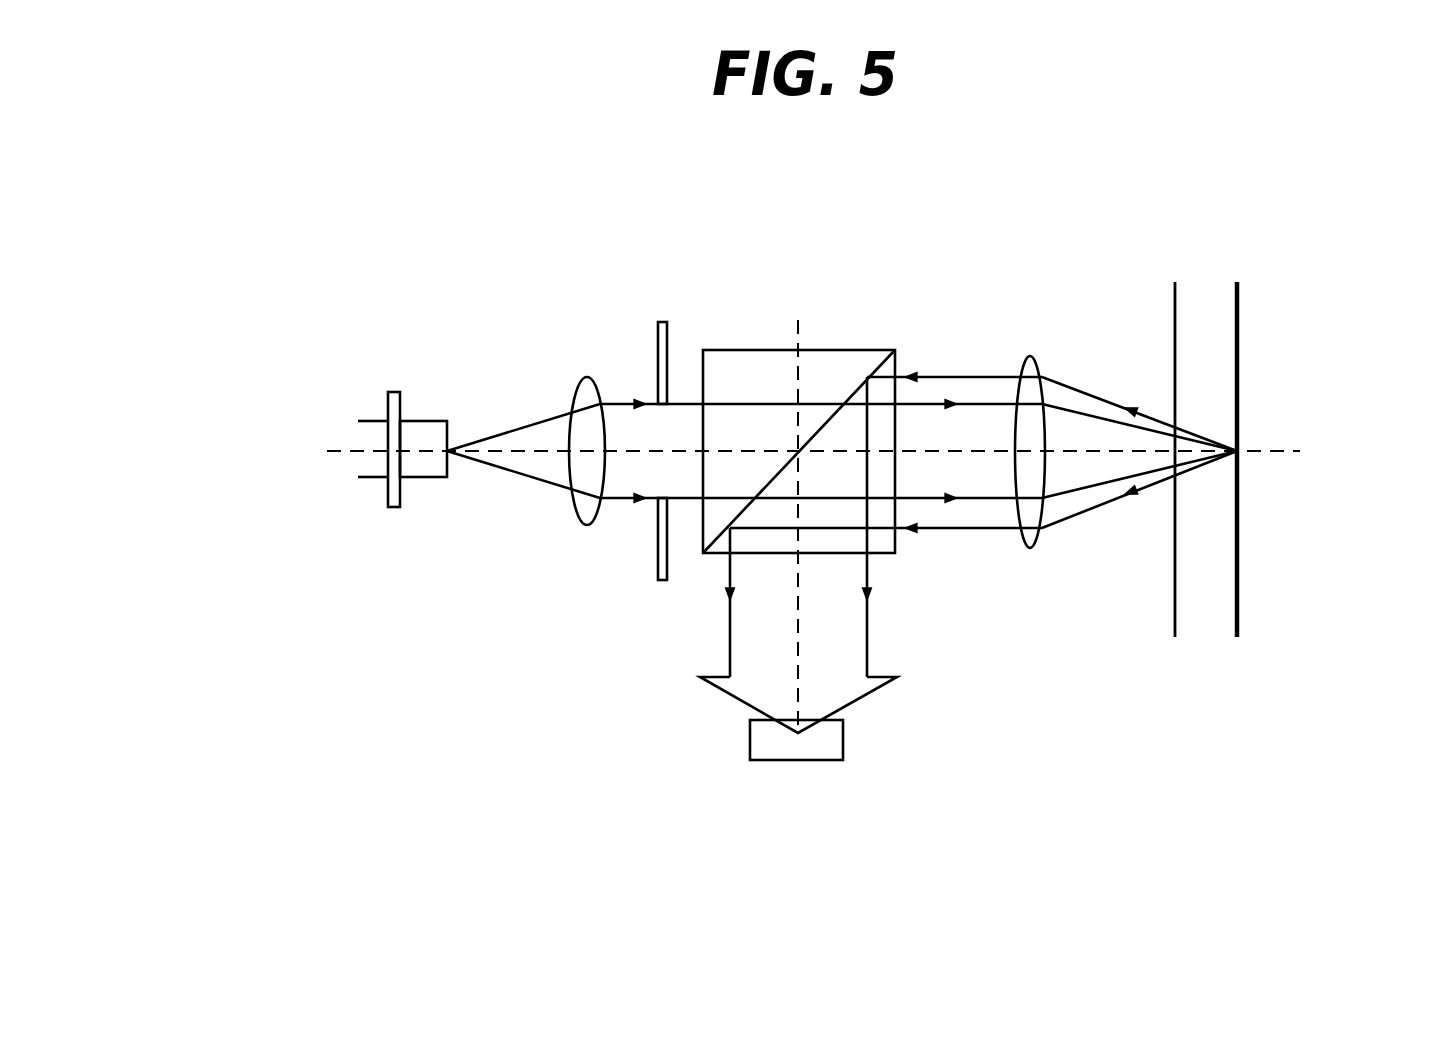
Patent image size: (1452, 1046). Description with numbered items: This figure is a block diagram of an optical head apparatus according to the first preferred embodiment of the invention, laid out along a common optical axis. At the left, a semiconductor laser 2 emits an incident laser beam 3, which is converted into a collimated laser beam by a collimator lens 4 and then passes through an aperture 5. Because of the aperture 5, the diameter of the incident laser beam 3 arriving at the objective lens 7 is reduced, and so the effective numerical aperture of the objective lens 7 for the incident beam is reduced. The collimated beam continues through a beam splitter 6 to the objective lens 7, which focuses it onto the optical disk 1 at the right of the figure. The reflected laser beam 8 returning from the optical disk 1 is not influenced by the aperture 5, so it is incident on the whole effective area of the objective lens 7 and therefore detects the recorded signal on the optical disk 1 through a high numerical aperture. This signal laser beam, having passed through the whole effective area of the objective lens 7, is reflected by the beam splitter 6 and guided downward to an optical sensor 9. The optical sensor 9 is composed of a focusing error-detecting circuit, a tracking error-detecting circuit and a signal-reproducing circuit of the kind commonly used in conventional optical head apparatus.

The optical disk 1 is at (1239, 320).
The semiconductor laser 2 is at (368, 420).
The incident laser beam 3 is at (527, 475).
The collimator lens 4 is at (587, 378).
The aperture 5 is at (673, 322).
The beam splitter 6 is at (840, 350).
The objective lens 7 is at (1032, 358).
The reflected laser beam 8 is at (947, 533).
The optical sensor 9 is at (772, 748).